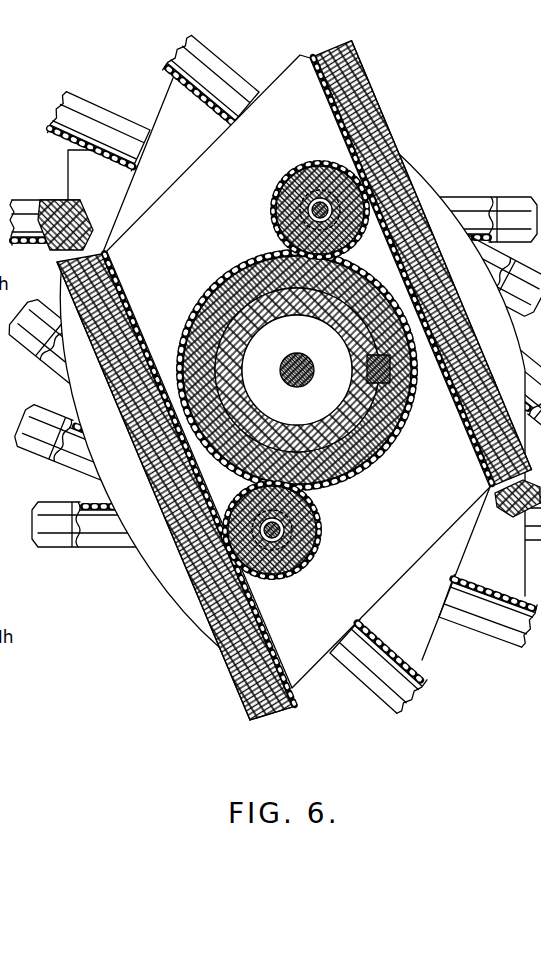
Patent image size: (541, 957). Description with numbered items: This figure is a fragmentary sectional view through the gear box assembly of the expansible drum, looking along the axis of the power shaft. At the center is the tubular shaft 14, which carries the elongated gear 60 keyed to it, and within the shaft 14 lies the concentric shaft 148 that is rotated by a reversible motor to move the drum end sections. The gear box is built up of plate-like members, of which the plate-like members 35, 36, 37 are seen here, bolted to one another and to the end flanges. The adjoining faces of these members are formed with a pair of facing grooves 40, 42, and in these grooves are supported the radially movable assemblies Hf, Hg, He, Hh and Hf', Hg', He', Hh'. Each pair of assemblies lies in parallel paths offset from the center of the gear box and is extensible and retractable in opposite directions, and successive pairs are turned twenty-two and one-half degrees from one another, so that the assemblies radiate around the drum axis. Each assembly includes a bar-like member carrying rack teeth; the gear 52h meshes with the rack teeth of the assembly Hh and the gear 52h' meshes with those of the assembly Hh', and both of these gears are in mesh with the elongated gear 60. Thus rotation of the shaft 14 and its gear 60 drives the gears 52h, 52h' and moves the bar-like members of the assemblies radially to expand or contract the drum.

The tubular shaft 14 is at (255, 334).
The shaft 148 is at (297, 388).
The elongated gear 60 is at (303, 288).
The gear 52h is at (294, 530).
The gear 52h' is at (292, 210).
The groove 40 is at (472, 447).
The groove 42 is at (124, 305).
The plate-like member 35 is at (503, 577).
The plate-like member 36 is at (417, 641).
The plate-like member 37 is at (305, 668).
The radially movable assembly Hf' is at (98, 123).
The radially movable assembly Hg' is at (212, 80).
The radially movable assembly He' is at (51, 197).
The radially movable assembly Hh' is at (442, 255).
The radially movable assembly Hf is at (76, 445).
The radially movable assembly Hg is at (62, 348).
The radially movable assembly He is at (96, 538).
The radially movable assembly Hh is at (153, 491).